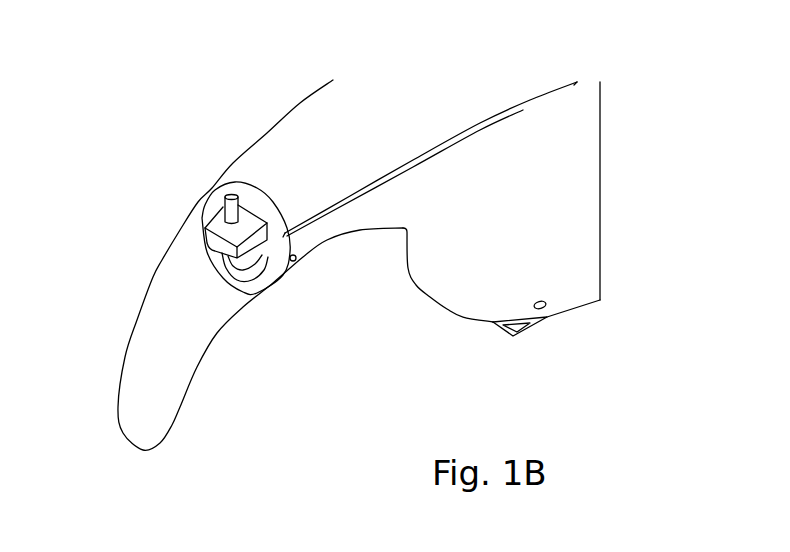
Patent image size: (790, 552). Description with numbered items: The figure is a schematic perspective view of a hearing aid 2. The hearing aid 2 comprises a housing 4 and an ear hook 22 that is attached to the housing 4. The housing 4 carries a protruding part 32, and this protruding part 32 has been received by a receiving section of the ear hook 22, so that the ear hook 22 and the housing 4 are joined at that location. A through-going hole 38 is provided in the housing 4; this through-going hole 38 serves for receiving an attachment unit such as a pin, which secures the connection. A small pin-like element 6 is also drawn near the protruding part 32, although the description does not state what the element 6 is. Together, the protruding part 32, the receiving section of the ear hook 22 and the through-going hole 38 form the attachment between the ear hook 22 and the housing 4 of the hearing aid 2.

The hearing aid 2 is at (129, 122).
The housing 4 is at (575, 277).
The pin 6 is at (223, 200).
The ear hook 22 is at (145, 293).
The protruding part 32 is at (213, 225).
The through-going hole 38 is at (297, 260).